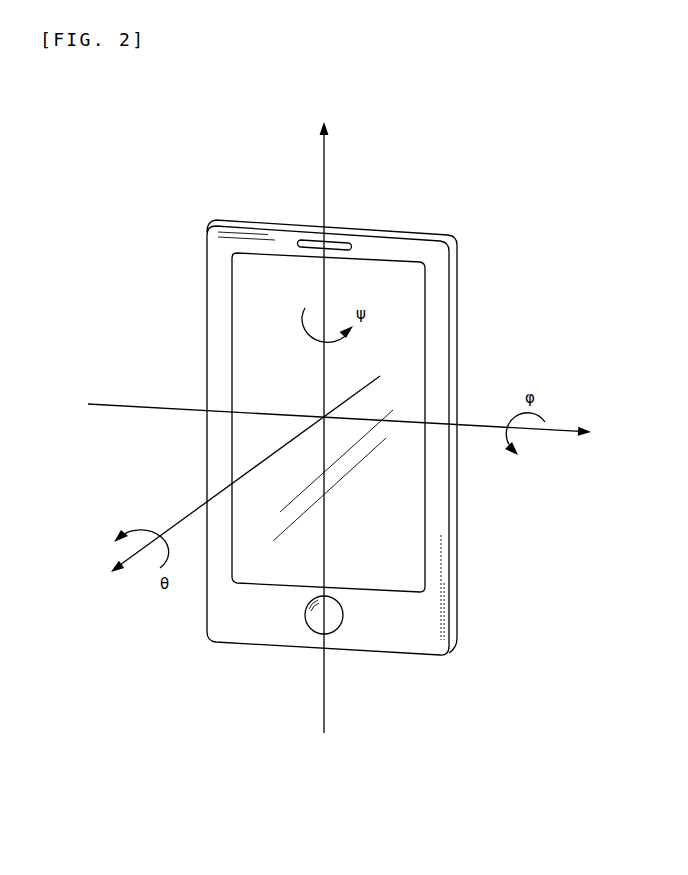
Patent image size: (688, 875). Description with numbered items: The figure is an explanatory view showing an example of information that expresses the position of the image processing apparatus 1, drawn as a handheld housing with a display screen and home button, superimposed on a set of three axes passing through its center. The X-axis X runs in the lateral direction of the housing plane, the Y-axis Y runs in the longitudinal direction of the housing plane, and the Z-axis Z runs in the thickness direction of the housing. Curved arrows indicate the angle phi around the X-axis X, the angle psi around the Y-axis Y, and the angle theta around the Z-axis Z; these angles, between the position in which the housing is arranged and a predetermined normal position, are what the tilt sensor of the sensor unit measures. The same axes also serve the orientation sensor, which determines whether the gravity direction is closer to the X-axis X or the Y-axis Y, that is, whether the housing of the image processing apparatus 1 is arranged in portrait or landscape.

The image processing apparatus 1 is at (188, 672).
The X-axis X is at (350, 422).
The Y-axis Y is at (330, 416).
The Z-axis Z is at (236, 485).